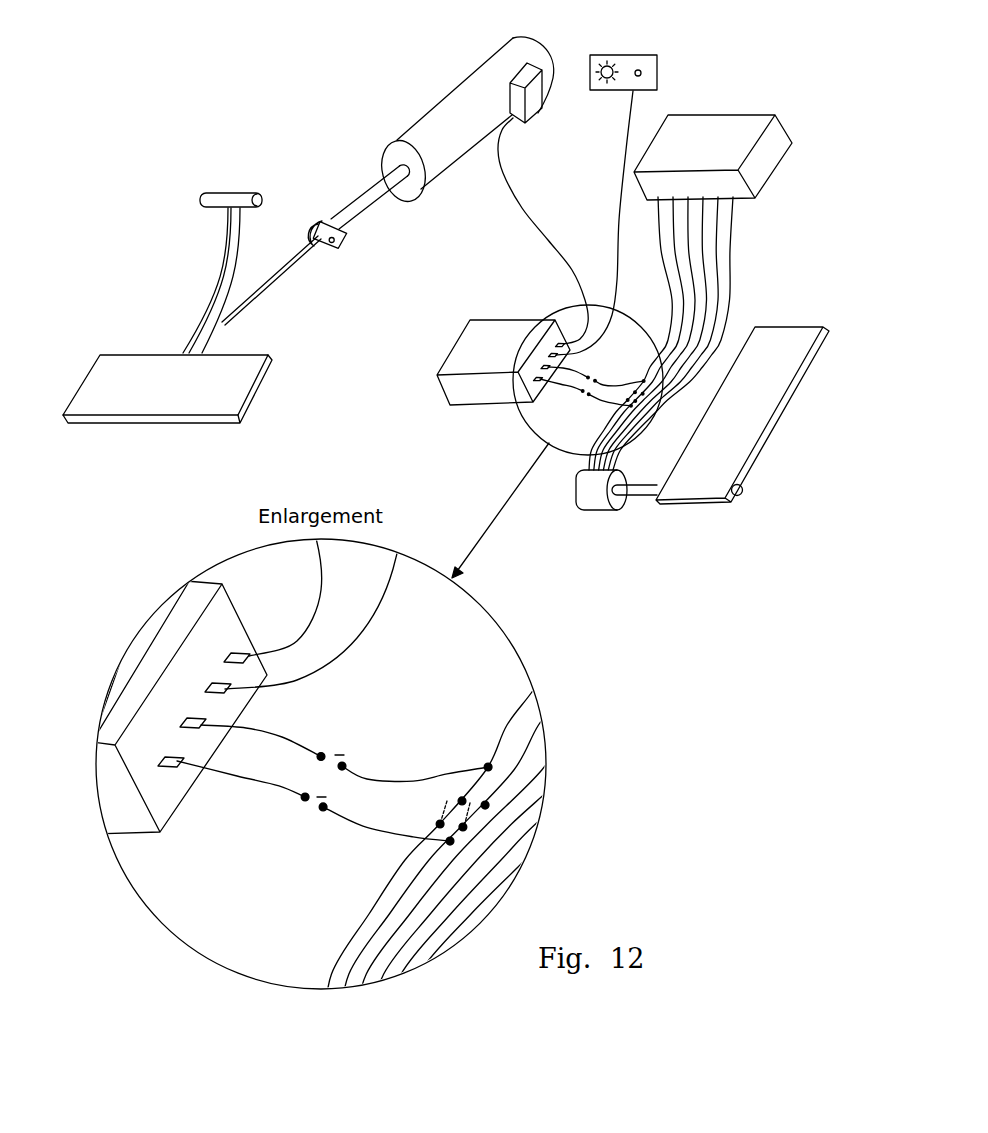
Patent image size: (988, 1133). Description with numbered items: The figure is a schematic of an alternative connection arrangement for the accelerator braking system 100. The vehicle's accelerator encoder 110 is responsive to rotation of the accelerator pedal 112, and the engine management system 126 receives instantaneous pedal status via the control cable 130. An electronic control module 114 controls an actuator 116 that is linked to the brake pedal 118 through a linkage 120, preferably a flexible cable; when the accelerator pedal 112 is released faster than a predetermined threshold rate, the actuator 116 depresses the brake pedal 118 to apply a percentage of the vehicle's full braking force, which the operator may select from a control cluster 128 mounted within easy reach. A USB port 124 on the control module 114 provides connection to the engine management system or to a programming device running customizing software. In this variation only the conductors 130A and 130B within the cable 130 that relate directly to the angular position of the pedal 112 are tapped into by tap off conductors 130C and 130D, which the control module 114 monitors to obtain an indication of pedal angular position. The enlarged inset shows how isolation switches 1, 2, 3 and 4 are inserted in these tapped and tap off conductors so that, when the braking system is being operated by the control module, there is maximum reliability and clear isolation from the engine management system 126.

The system 100 is at (177, 94).
The accelerator encoder 110 is at (600, 511).
The accelerator pedal 112 is at (773, 323).
The electronic control module 114 is at (483, 395).
The actuator 116 is at (435, 118).
The brake pedal 118 is at (138, 320).
The linkage 120 is at (277, 277).
The USB port 124 is at (431, 360).
The engine management system 126 is at (715, 108).
The control cluster 128 is at (612, 50).
The control cable 130 is at (723, 221).
The conductor 130A is at (660, 217).
The conductor 130B is at (675, 242).
The tap off conductor 130C is at (268, 787).
The tap off conductor 130D is at (280, 736).
The isolation switch 1 is at (436, 809).
The isolation switch 2 is at (475, 818).
The isolation switch 3 is at (337, 741).
The isolation switch 4 is at (320, 784).